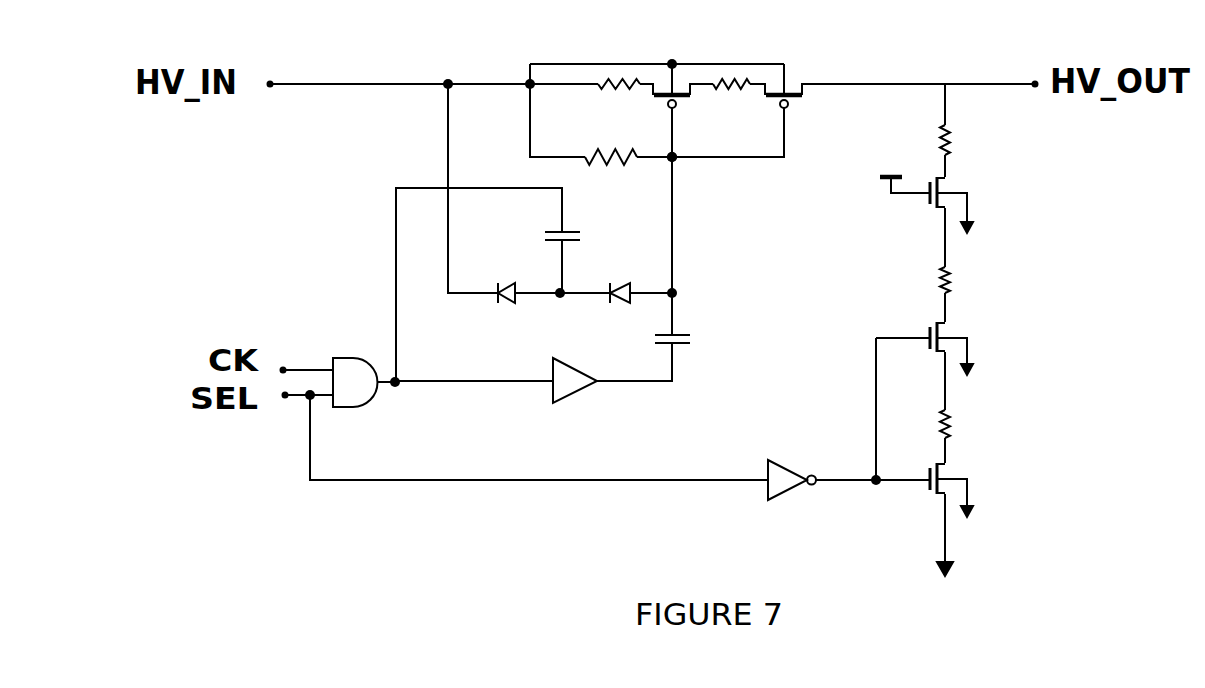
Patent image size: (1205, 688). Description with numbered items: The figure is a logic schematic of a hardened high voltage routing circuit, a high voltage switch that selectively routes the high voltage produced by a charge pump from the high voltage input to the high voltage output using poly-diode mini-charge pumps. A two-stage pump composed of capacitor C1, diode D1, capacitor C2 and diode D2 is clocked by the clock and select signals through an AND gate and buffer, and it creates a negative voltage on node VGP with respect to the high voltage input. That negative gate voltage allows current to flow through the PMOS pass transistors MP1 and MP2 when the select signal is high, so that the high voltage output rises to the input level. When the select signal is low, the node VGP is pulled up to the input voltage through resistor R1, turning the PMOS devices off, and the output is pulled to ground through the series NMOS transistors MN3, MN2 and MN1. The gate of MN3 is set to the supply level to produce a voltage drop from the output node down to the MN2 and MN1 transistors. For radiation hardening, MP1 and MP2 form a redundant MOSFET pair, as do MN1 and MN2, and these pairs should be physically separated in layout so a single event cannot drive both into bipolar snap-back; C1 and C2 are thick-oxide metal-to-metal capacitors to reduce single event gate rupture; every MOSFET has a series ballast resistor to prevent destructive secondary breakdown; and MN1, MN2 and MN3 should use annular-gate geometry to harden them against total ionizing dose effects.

The PMOS pass transistor MP1 is at (655, 178).
The PMOS pass transistor MP2 is at (853, 89).
The resistor R1 is at (607, 138).
The charge pump capacitor C1 is at (577, 248).
The charge pump capacitor C2 is at (665, 354).
The poly-diode D1 is at (515, 275).
The poly-diode D2 is at (616, 275).
The PMOS gate node VGP is at (712, 157).
The NMOS transistor MN3 is at (966, 179).
The NMOS transistor MN2 is at (961, 373).
The NMOS transistor MN1 is at (963, 463).